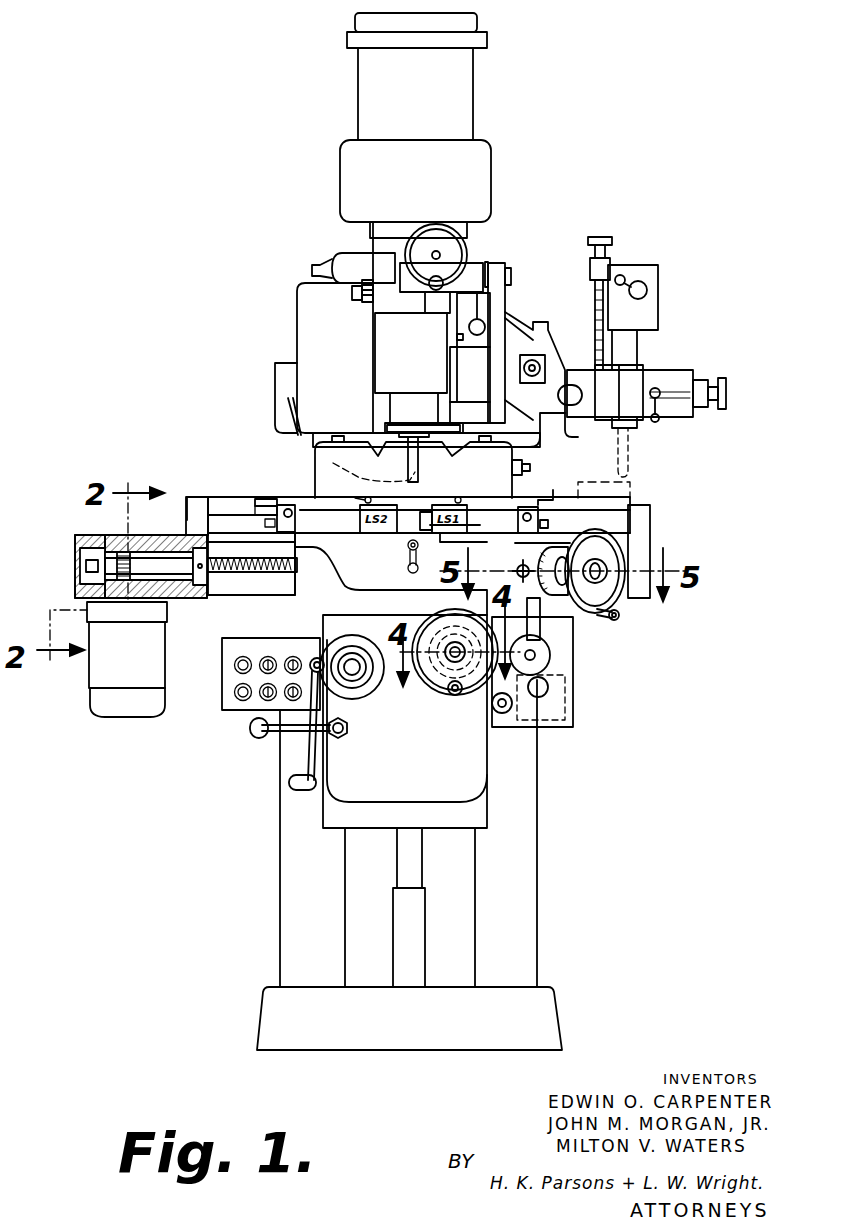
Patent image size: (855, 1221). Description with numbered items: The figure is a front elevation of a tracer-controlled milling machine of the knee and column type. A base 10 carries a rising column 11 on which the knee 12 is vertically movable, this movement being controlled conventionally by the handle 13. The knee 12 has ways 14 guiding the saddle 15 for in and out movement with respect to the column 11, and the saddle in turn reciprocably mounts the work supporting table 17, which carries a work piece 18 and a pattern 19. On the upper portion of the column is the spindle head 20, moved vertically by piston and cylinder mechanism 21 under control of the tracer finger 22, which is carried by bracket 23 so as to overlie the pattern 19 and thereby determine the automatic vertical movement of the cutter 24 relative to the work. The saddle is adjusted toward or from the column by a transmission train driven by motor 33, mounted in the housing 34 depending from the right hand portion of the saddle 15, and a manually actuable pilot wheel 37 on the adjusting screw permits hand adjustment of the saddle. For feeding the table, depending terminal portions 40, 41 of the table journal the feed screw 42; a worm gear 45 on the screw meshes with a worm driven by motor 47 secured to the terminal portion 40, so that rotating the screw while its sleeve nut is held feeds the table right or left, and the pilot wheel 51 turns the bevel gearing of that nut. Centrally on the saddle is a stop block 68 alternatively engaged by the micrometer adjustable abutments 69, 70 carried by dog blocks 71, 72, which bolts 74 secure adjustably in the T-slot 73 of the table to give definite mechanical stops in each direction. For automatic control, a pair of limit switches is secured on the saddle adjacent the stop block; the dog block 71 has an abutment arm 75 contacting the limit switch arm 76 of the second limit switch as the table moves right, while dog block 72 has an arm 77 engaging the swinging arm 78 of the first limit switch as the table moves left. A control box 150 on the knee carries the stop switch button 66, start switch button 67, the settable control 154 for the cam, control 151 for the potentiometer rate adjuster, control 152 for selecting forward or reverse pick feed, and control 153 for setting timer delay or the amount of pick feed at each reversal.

The base 10 is at (556, 1004).
The column 11 is at (538, 888).
The knee 12 is at (489, 774).
The handle 13 is at (310, 755).
The ways 14 is at (383, 608).
The saddle 15 is at (293, 595).
The work supporting table 17 is at (632, 510).
The work piece 18 is at (363, 483).
The pattern 19 is at (632, 491).
The spindle head 20 is at (297, 300).
The piston and cylinder mechanism 21 is at (491, 184).
The tracer finger 22 is at (630, 452).
The bracket 23 is at (658, 373).
The cutter 24 is at (390, 440).
The motor 33 is at (575, 716).
The housing 34 is at (568, 658).
The pilot wheel 37 is at (468, 698).
The depending terminal portion 40 is at (200, 598).
The depending terminal portion 41 is at (640, 598).
The feed screw 42 is at (240, 577).
The worm gear 45 is at (137, 538).
The motor 47 is at (95, 704).
The pilot wheel 51 is at (578, 613).
The stop switch button 66 is at (236, 669).
The start switch button 67 is at (237, 698).
The stop block 68 is at (417, 522).
The micrometer adjustable abutment 69 is at (265, 519).
The micrometer adjustable abutment 70 is at (550, 527).
The dog block 71 is at (289, 505).
The dog block 72 is at (528, 507).
The T-slot 73 is at (320, 512).
The bolts 74 is at (287, 505).
The abutment arm 75 is at (268, 519).
The limit switch arm 76 is at (364, 499).
The arm 77 is at (553, 500).
The swinging arm 78 is at (461, 500).
The control box 150 is at (232, 710).
The settable control 151 is at (263, 676).
The settable control 152 is at (266, 701).
The settable control 153 is at (291, 657).
The settable control 154 is at (300, 700).